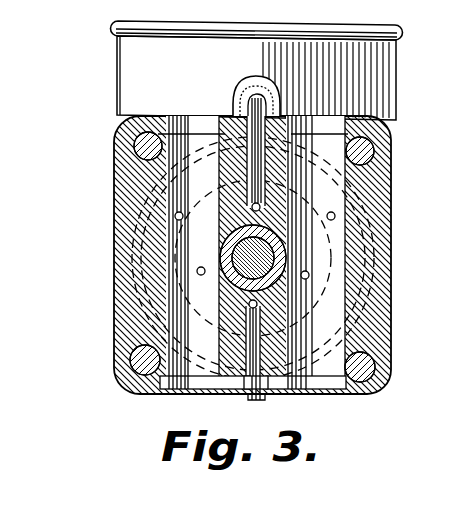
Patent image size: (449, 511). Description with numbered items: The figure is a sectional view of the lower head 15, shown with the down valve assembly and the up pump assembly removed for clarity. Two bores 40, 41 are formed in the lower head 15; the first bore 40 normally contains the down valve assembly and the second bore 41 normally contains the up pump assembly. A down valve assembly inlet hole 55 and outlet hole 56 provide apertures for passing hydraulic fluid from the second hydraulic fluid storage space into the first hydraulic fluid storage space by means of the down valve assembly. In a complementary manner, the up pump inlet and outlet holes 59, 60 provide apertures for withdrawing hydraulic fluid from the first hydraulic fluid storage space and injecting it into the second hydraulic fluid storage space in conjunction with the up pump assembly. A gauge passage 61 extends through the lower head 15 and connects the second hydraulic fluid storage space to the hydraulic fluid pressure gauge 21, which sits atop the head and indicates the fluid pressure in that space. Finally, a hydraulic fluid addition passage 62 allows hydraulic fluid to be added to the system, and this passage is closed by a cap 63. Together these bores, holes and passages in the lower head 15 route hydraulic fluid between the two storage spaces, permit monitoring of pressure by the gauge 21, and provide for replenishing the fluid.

The hydraulic fluid pressure gauge 21 is at (390, 78).
The gauge passage 61 is at (333, 162).
The down valve assembly outlet hole 56 is at (327, 208).
The down valve assembly inlet hole 55 is at (301, 267).
The lower head 15 is at (383, 324).
The up pump inlet hole 59 is at (167, 208).
The up pump outlet hole 60 is at (189, 263).
The bore 41 is at (179, 381).
The bore 40 is at (316, 362).
The hydraulic fluid addition passage 62 is at (231, 385).
The cap 63 is at (248, 386).